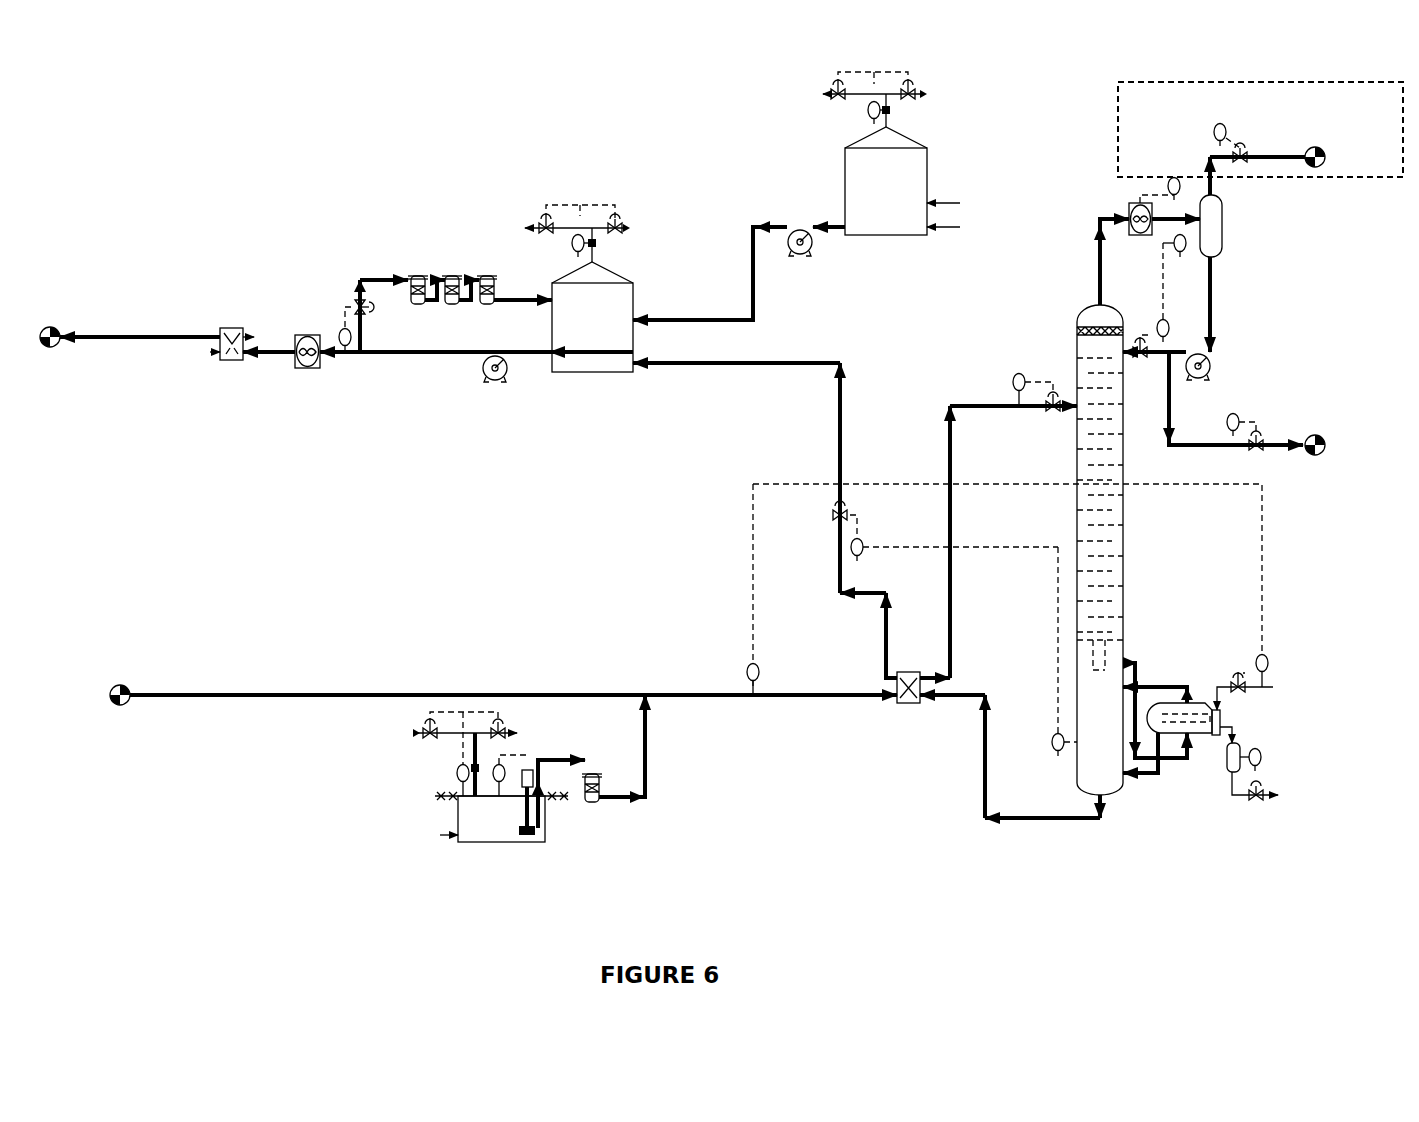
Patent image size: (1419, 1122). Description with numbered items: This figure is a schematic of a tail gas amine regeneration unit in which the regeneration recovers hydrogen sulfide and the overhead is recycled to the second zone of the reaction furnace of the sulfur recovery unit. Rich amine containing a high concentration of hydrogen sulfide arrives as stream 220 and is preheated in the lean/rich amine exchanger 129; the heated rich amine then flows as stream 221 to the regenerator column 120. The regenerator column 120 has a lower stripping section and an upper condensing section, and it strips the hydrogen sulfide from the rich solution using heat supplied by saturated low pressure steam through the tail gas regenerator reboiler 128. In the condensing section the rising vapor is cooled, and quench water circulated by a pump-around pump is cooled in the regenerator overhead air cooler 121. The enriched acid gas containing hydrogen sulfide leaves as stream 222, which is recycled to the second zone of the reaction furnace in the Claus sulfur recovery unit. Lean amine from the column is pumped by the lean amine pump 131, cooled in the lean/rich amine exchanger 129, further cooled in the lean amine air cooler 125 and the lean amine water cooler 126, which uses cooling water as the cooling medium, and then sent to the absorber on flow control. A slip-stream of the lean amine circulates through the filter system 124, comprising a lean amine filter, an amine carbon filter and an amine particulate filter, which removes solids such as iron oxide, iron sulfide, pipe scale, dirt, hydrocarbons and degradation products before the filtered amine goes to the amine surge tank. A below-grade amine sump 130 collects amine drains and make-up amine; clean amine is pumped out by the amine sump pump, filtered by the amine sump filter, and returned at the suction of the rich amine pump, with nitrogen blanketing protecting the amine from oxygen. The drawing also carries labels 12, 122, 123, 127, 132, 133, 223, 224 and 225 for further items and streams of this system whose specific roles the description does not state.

The regenerator column 120 is at (1087, 305).
The regenerator overhead air cooler 121 is at (1130, 203).
The amine storage tank 122 is at (845, 148).
The amine surge tank 123 is at (560, 282).
The filter system 124 is at (1222, 255).
The lean amine air cooler 125 is at (312, 333).
The lean amine water cooler 126 is at (228, 328).
The lean amine line 127 is at (500, 352).
The tail gas regenerator reboiler 128 is at (1205, 702).
The lean/rich amine exchanger 129 is at (913, 706).
The amine sump 130 is at (443, 795).
The lean amine pump 131 is at (495, 382).
The amine makeup pump 132 is at (815, 257).
The reflux pump 133 is at (1208, 378).
The amine filters 12 is at (452, 272).
The rich amine stream 220 is at (318, 695).
The heated rich amine stream 221 is at (958, 406).
The enriched acid gas stream 222 is at (1292, 157).
The regenerator bottoms lean amine line 223 is at (1042, 818).
The cooled lean amine line to surge tank 224 is at (822, 363).
The lean amine line to absorber 225 is at (152, 335).